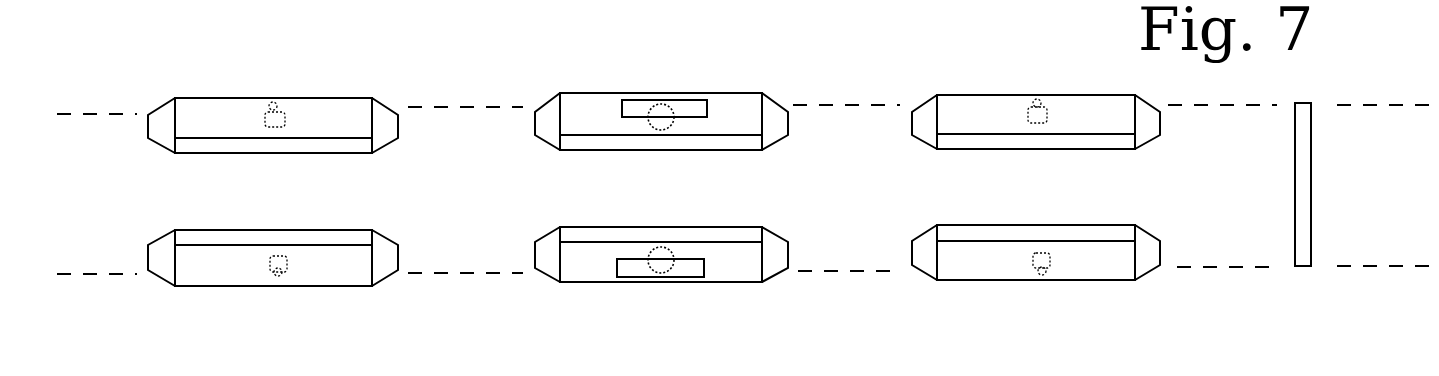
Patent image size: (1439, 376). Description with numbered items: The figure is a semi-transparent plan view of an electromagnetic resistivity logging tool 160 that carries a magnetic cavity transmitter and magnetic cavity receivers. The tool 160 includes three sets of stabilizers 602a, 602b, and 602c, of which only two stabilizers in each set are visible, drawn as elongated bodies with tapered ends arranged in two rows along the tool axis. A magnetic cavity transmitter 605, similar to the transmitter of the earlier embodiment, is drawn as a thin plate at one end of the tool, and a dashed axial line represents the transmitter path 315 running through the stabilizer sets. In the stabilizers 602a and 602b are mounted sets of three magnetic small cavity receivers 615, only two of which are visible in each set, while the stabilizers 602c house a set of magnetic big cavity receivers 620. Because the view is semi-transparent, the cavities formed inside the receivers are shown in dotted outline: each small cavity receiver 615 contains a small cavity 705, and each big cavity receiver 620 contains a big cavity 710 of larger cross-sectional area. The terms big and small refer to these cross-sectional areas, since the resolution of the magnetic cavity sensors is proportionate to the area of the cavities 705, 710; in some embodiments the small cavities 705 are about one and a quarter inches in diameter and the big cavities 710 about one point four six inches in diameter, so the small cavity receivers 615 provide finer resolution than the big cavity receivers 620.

The electromagnetic resistivity logging tool 160 is at (150, 34).
The transmitter 315 is at (92, 114).
The stabilizer 602a is at (1145, 102).
The stabilizer 602b is at (380, 106).
The stabilizer 602c is at (773, 100).
The magnetic cavity transmitter 605 is at (1311, 103).
The magnetic small cavity receiver 615 is at (273, 101).
The magnetic big cavity receiver 620 is at (657, 105).
The small cavity 705 is at (287, 117).
The big cavity 710 is at (680, 110).